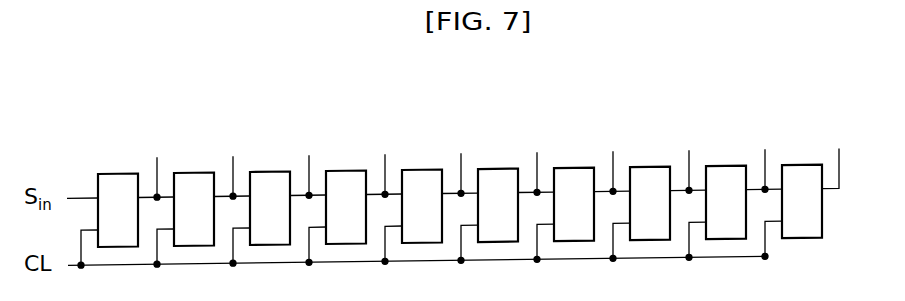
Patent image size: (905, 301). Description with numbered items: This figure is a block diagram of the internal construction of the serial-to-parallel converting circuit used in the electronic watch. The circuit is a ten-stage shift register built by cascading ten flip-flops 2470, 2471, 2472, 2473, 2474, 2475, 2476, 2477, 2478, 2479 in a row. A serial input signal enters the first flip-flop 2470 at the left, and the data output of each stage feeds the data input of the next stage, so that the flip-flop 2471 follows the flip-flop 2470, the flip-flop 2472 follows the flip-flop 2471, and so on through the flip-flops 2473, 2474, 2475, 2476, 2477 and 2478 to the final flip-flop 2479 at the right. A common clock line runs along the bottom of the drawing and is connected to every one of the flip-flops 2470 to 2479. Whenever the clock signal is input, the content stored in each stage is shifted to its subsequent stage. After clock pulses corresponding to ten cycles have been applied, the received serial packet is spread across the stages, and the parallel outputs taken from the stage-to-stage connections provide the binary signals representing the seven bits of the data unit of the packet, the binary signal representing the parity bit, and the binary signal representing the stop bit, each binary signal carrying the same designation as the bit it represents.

The flip-flop 2470 is at (117, 174).
The flip-flop 2471 is at (193, 173).
The flip-flop 2472 is at (269, 172).
The flip-flop 2473 is at (345, 171).
The flip-flop 2474 is at (421, 170).
The flip-flop 2475 is at (497, 169).
The flip-flop 2476 is at (573, 168).
The flip-flop 2477 is at (649, 167).
The flip-flop 2478 is at (725, 166).
The flip-flop 2479 is at (801, 165).